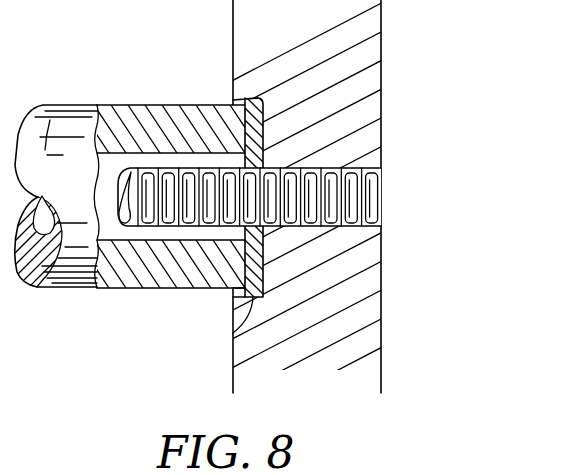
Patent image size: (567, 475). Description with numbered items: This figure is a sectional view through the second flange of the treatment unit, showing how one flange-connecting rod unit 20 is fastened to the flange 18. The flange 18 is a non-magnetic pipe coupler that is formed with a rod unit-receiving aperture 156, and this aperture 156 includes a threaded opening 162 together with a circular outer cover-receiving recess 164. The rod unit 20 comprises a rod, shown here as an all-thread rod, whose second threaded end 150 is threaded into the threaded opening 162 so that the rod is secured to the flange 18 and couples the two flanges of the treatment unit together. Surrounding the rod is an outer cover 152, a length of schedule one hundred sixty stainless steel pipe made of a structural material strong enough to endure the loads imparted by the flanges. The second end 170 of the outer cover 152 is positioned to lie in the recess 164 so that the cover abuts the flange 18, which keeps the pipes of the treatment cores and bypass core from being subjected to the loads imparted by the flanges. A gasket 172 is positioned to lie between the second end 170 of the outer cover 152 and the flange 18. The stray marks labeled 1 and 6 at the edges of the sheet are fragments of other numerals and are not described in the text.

The flange 18 is at (240, 32).
The flange-connecting rod unit 20 is at (153, 305).
The outer cover 152 is at (169, 196).
The circular outer cover-receiving recess 164 is at (233, 106).
The second end 170 is at (235, 270).
The gasket 172 is at (232, 336).
The second threaded end 150 is at (276, 225).
The rod unit-receiving aperture 156 is at (350, 237).
The threaded opening 162 is at (350, 182).
The partial numeral 1 is at (52, 372).
The partial numeral 6 is at (4, 187).